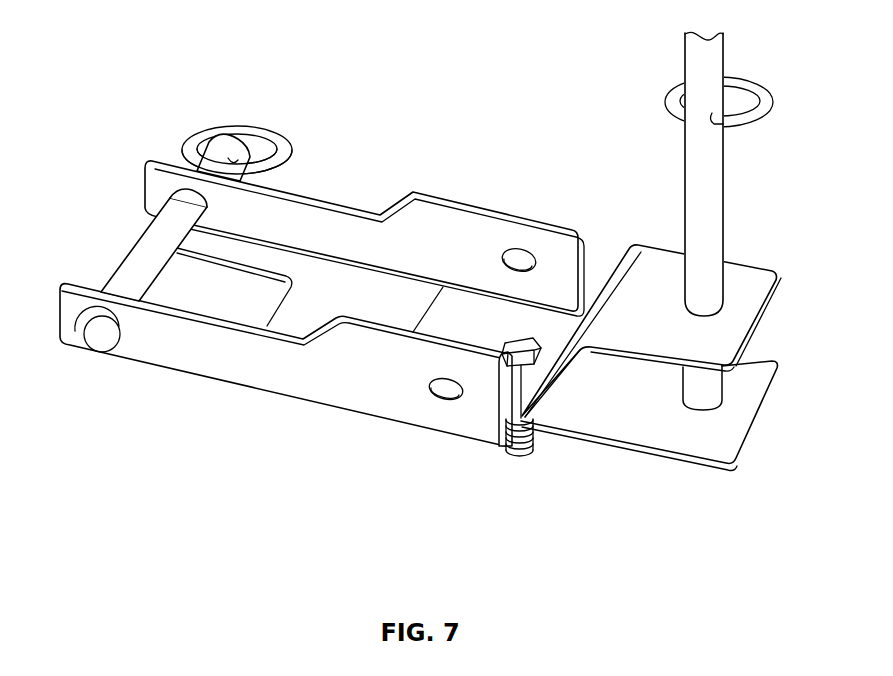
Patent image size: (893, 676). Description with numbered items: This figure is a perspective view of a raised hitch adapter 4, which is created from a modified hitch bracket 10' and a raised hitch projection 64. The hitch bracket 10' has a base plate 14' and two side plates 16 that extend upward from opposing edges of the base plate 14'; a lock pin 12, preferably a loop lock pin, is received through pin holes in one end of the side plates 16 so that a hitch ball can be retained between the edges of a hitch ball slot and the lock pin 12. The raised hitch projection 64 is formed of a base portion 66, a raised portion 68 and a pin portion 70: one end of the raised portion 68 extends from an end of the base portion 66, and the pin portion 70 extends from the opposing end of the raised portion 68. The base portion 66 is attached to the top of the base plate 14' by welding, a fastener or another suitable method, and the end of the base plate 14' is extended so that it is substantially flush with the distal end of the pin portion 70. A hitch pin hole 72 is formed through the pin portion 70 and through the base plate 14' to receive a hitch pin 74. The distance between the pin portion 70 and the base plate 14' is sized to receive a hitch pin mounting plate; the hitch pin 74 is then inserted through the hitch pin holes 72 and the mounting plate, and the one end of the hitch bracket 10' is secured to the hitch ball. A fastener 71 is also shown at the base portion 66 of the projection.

The raised hitch adapter 4 is at (420, 279).
The hitch bracket 10' is at (322, 285).
The lock pin 12 is at (232, 143).
The base plate 14' is at (651, 270).
The side plates 16 is at (459, 243).
The raised hitch projection 64 is at (650, 233).
The base portion 66 is at (490, 346).
The raised portion 68 is at (557, 383).
The pin portion 70 is at (630, 300).
The threaded bolt 71 is at (529, 458).
The hitch pin hole 72 is at (682, 303).
The hitch pin 74 is at (696, 269).